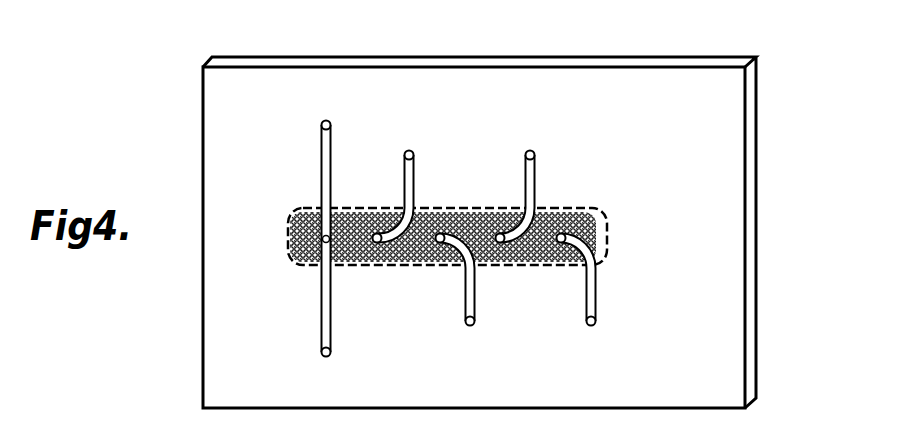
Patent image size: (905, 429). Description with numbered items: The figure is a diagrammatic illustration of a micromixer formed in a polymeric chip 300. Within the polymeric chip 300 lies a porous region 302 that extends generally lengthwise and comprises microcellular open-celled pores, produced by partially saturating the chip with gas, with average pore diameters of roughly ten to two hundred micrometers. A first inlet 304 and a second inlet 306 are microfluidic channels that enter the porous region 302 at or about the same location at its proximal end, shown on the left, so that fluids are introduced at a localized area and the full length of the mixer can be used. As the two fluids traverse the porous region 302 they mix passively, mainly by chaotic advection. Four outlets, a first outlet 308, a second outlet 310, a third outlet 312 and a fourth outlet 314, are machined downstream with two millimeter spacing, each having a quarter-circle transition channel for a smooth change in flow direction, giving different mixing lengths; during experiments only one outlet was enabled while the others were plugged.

The polymeric chip 300 is at (705, 62).
The porous region 302 is at (463, 208).
The first inlet 304 is at (320, 188).
The second inlet 306 is at (320, 300).
The first outlet 308 is at (403, 180).
The second outlet 310 is at (476, 292).
The third outlet 312 is at (536, 176).
The fourth outlet 314 is at (598, 298).